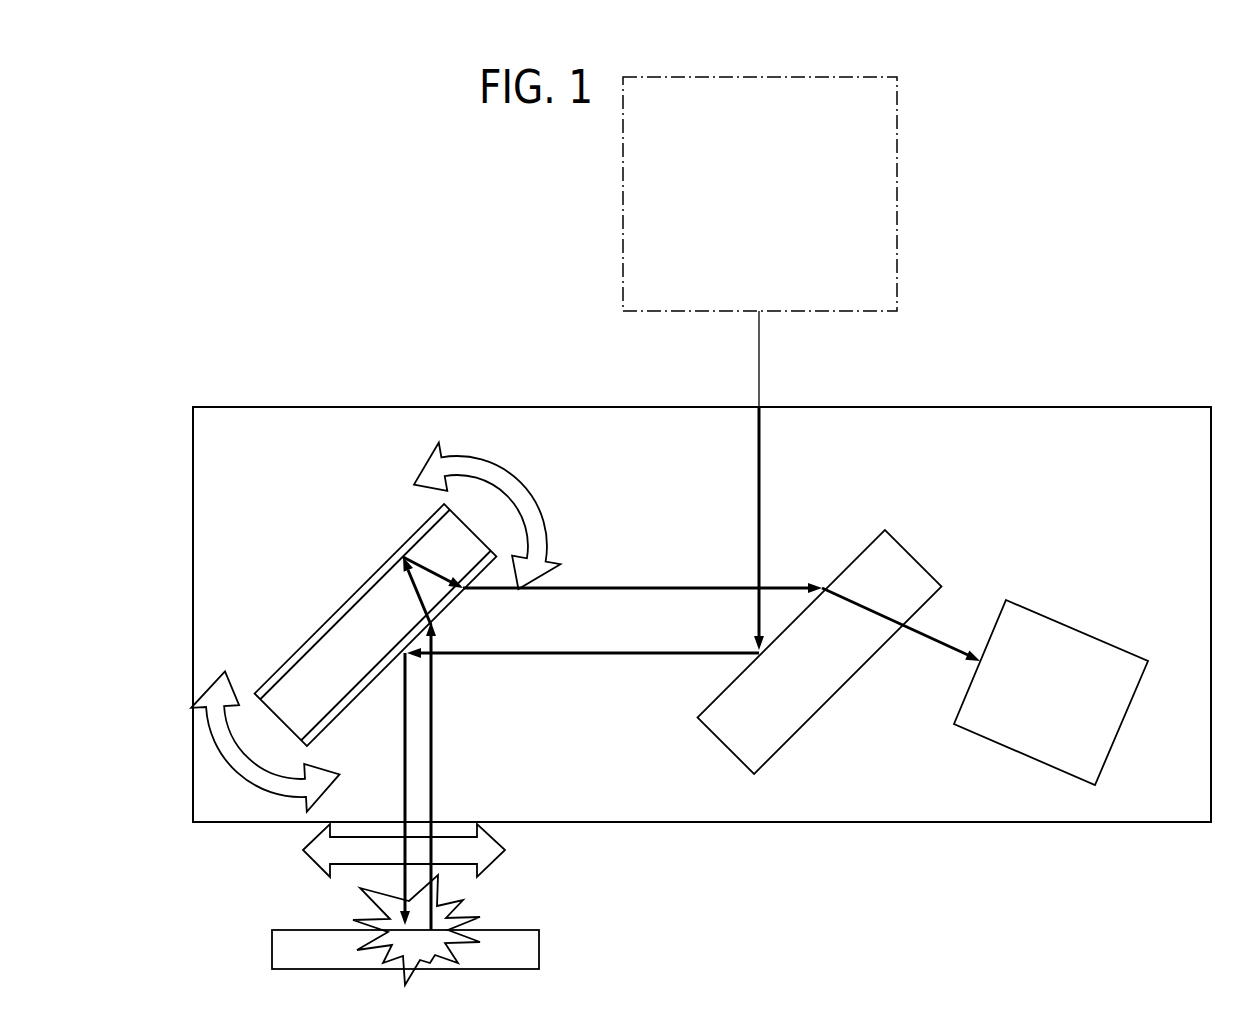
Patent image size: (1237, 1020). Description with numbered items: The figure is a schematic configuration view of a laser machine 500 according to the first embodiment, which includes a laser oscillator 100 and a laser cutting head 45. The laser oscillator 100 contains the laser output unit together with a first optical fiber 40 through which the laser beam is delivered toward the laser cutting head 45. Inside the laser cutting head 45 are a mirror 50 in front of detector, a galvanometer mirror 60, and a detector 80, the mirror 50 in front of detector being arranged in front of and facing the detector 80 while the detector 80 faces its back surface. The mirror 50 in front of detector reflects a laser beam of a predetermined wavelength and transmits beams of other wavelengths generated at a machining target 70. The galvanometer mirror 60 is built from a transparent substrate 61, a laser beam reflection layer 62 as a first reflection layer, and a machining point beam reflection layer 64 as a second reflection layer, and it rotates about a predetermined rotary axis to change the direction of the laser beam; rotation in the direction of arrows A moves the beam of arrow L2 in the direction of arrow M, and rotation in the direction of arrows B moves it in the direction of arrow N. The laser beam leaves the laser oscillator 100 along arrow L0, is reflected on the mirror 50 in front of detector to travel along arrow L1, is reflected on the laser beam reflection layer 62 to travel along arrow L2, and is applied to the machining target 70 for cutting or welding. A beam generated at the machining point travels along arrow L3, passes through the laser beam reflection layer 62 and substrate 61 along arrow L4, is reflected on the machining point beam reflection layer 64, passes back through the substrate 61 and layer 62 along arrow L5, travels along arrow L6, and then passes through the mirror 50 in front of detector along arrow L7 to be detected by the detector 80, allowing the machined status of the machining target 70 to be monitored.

The laser machine 500 is at (360, 288).
The laser oscillator 100 is at (637, 201).
The first optical fiber 40 is at (760, 352).
The laser cutting head 45 is at (1163, 406).
The galvanometer mirror 60 is at (310, 495).
The transparent substrate 61 is at (468, 528).
The laser beam reflection layer 62 is at (483, 553).
The machining point beam reflection layer 64 is at (274, 672).
The mirror in front of detector 50 is at (902, 566).
The detector 80 is at (1083, 647).
The machining target 70 is at (530, 948).
The arrow L0 is at (761, 470).
The arrow L1 is at (563, 657).
The arrow L2 is at (403, 737).
The arrow L3 is at (433, 770).
The arrow L4 is at (410, 590).
The arrow L5 is at (430, 563).
The arrow L6 is at (682, 584).
The return light toward detector L7 is at (919, 641).
The arrows A is at (265, 745).
The arrows B is at (490, 516).
The arrow N is at (396, 854).
The arrow M is at (513, 871).